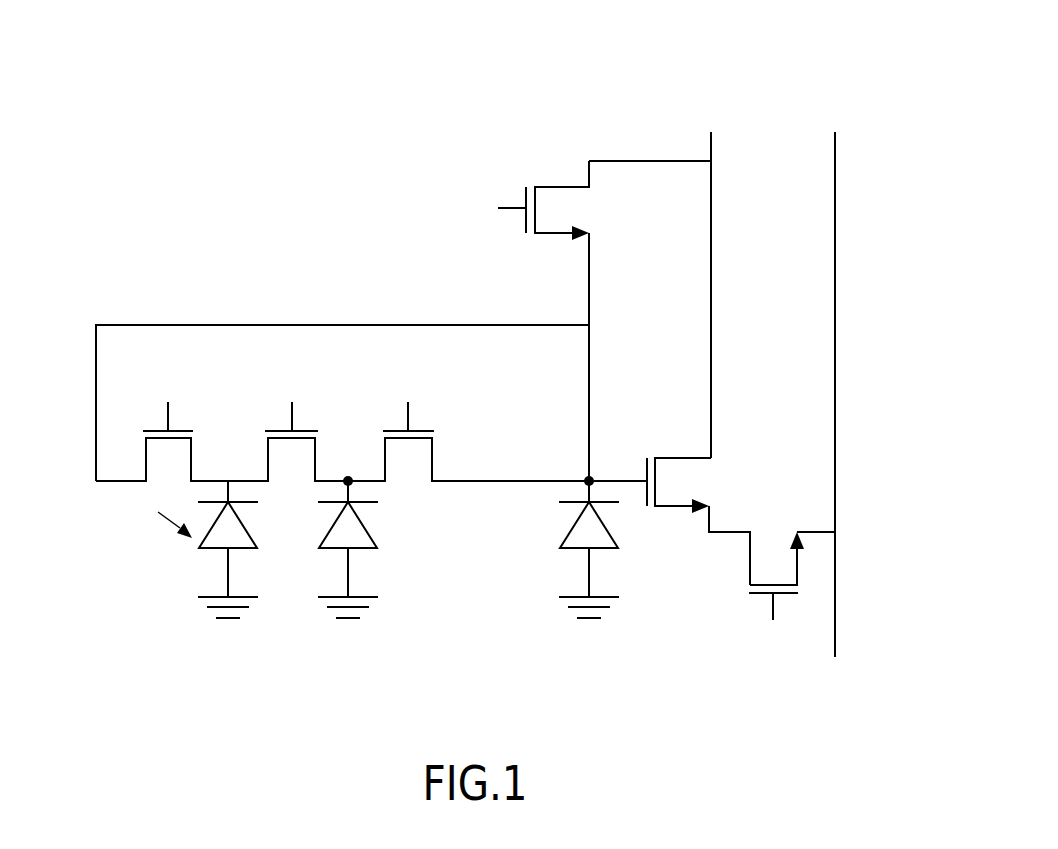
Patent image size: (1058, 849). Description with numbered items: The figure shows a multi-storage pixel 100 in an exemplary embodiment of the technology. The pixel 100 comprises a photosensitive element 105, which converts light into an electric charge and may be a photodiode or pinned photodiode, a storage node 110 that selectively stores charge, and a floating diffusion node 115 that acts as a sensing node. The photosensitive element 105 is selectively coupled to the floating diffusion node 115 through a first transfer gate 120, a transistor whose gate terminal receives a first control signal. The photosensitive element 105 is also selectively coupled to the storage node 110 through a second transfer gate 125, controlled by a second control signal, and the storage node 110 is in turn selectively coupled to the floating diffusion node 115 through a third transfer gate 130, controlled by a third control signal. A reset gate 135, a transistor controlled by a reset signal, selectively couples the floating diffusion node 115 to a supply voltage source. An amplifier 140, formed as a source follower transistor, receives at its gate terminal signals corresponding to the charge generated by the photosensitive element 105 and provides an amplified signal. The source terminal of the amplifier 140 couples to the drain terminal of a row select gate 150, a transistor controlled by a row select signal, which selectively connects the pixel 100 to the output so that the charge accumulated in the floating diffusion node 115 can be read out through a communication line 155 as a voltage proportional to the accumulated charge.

The multi-storage pixel 100 is at (688, 77).
The photosensitive element 105 is at (208, 550).
The storage node 110 is at (350, 476).
The floating diffusion node 115 is at (585, 483).
The first transfer gate 120 is at (180, 447).
The second transfer gate 125 is at (303, 447).
The third transfer gate 130 is at (427, 453).
The reset gate 135 is at (553, 217).
The amplifier 140 is at (677, 473).
The row select gate 150 is at (755, 569).
The communication line 155 is at (837, 413).